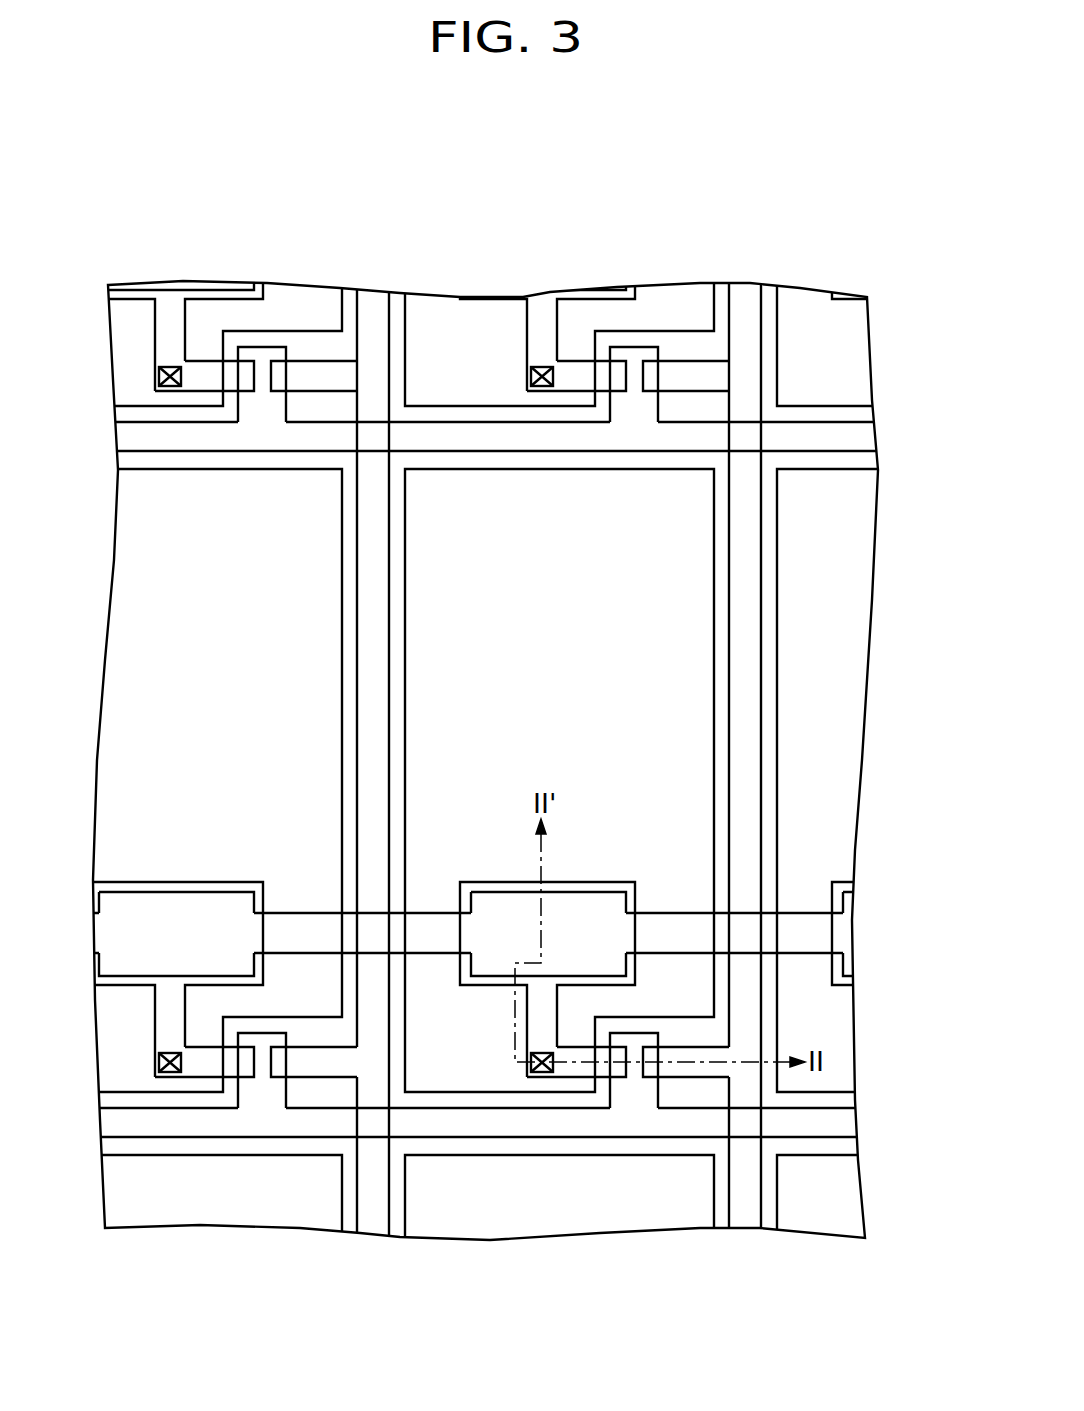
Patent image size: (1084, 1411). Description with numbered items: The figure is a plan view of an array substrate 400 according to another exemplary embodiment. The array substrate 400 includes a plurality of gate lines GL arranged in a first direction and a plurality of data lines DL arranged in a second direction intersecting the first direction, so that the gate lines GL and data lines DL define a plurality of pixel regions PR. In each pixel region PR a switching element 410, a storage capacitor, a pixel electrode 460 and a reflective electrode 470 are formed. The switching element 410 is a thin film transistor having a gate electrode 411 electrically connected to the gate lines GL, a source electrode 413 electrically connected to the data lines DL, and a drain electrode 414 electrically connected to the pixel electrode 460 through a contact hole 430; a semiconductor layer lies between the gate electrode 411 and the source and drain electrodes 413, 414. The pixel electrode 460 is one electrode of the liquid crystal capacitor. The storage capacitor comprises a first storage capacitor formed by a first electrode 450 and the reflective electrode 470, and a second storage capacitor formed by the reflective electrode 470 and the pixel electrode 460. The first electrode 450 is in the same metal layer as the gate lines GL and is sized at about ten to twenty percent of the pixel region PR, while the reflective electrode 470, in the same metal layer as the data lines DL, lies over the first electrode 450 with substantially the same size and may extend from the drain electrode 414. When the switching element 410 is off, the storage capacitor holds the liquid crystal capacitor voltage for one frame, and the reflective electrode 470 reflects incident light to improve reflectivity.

The array substrate 400 is at (488, 223).
The switching element 410 is at (450, 856).
The gate electrode 411 is at (635, 1090).
The source electrode 413 is at (707, 1068).
The drain electrode 414 is at (588, 1068).
The contact hole 430 is at (541, 1073).
The first electrode 450 is at (612, 920).
The pixel electrode 460 is at (675, 756).
The reflective electrode 470 is at (553, 923).
The data line DL is at (778, 1262).
The gate line GL is at (850, 1128).
The pixel region PR is at (494, 552).